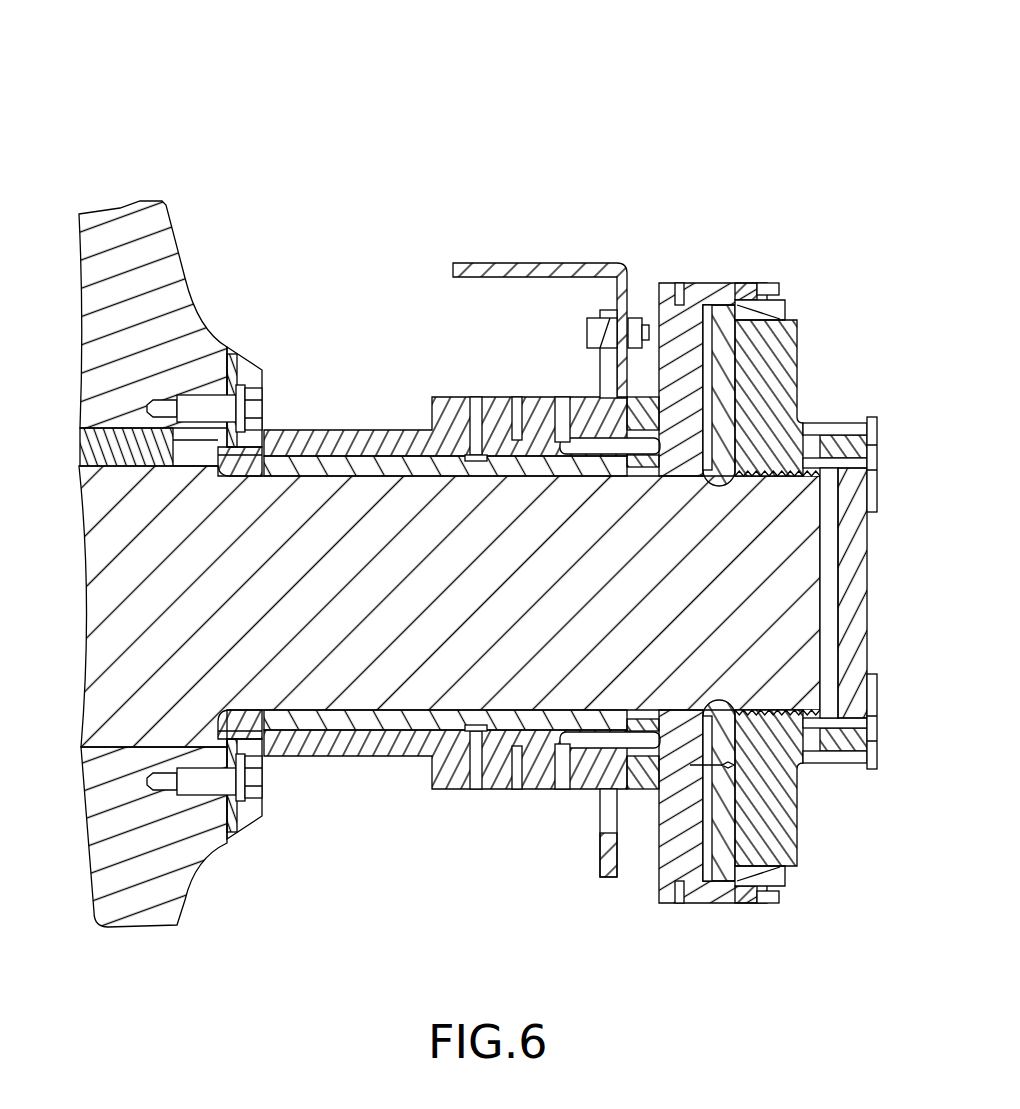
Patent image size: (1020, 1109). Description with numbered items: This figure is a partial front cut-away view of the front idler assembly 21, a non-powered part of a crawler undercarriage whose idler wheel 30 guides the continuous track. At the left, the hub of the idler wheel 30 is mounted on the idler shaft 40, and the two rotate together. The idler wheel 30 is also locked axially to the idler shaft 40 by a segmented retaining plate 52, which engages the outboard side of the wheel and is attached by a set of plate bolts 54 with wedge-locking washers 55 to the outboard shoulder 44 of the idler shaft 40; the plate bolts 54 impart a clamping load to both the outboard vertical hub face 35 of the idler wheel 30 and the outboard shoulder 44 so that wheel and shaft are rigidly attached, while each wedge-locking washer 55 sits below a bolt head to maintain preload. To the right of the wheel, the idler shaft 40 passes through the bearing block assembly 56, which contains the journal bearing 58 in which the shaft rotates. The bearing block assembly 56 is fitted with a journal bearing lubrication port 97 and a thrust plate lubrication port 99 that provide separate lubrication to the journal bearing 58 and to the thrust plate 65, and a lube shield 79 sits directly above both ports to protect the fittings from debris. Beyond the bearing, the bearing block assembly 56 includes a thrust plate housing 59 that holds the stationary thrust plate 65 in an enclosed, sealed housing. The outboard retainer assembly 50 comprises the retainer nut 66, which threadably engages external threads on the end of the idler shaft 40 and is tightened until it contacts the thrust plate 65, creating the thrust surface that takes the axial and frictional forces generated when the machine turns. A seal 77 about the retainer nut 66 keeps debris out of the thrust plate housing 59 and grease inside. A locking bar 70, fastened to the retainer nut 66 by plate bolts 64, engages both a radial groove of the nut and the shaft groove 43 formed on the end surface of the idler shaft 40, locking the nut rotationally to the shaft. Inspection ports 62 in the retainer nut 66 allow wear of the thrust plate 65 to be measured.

The front idler assembly 21 is at (105, 140).
The idler wheel 30 is at (155, 193).
The outboard vertical hub face 35 is at (238, 372).
The idler shaft 40 is at (80, 582).
The shaft groove 43 is at (833, 655).
The outboard shoulder 44 is at (232, 732).
The outboard retainer assembly 50 is at (710, 232).
The segmented retaining plate 52 is at (233, 350).
The plate bolts 54 is at (266, 404).
The wedge-locking washers 55 is at (252, 380).
The bearing block assembly 56 is at (378, 430).
The journal bearing 58 is at (268, 452).
The thrust plate housing 59 is at (690, 908).
The inspection ports 62 is at (813, 463).
The plate bolts 64 is at (885, 460).
The thrust plate 65 is at (724, 868).
The retainer nut 66 is at (807, 337).
The locking bar 70 is at (868, 558).
The seal 77 is at (772, 313).
The lube shield 79 is at (497, 262).
The journal bearing lubrication port 97 is at (475, 397).
The thrust plate lubrication port 99 is at (563, 397).